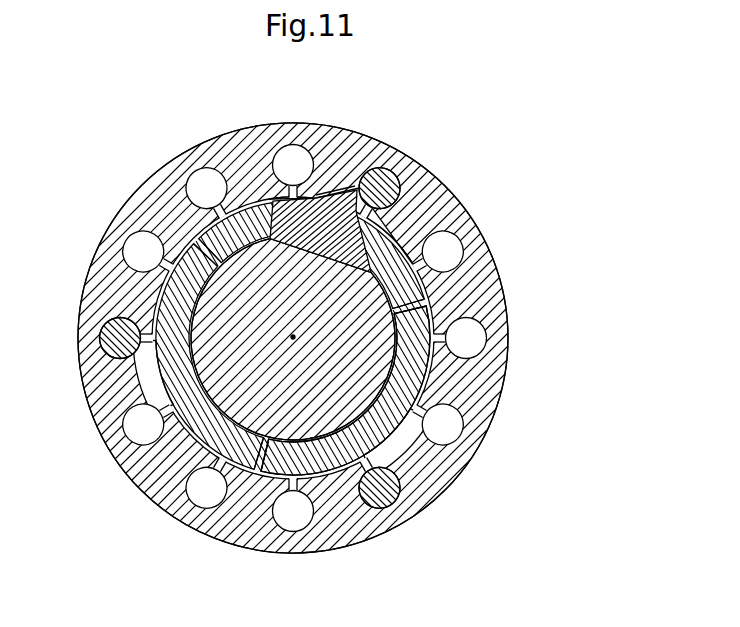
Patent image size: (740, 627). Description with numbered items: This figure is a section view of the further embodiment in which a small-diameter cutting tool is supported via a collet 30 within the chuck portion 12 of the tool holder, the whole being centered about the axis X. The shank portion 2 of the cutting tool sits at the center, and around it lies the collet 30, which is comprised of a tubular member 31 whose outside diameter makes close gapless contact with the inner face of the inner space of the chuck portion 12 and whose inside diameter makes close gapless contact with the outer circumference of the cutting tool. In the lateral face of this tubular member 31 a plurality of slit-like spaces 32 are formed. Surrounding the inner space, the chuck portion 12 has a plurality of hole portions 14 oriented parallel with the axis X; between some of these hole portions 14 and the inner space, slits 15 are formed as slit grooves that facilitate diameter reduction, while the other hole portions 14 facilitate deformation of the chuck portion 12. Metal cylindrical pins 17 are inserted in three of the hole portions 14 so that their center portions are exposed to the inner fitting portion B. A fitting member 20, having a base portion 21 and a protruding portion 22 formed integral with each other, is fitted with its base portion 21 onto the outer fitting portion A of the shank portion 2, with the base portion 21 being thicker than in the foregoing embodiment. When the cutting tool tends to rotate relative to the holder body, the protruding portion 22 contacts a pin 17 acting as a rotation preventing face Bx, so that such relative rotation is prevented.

The chuck portion 12 is at (508, 352).
The protruding portion 22 is at (352, 150).
The hole portions 14 is at (200, 168).
The pins 17 is at (397, 180).
The slits 15 is at (336, 375).
The slit-like spaces 32 is at (257, 216).
The tubular member 31 is at (428, 365).
The collet 30 is at (301, 179).
The fitting member 20 is at (313, 197).
The shank portion 2 is at (225, 338).
The base portion 21 is at (290, 268).
The outer fitting portion A is at (192, 175).
The inner fitting portion B is at (138, 378).
The rotation preventing faces Bx is at (330, 210).
The axis X is at (293, 337).